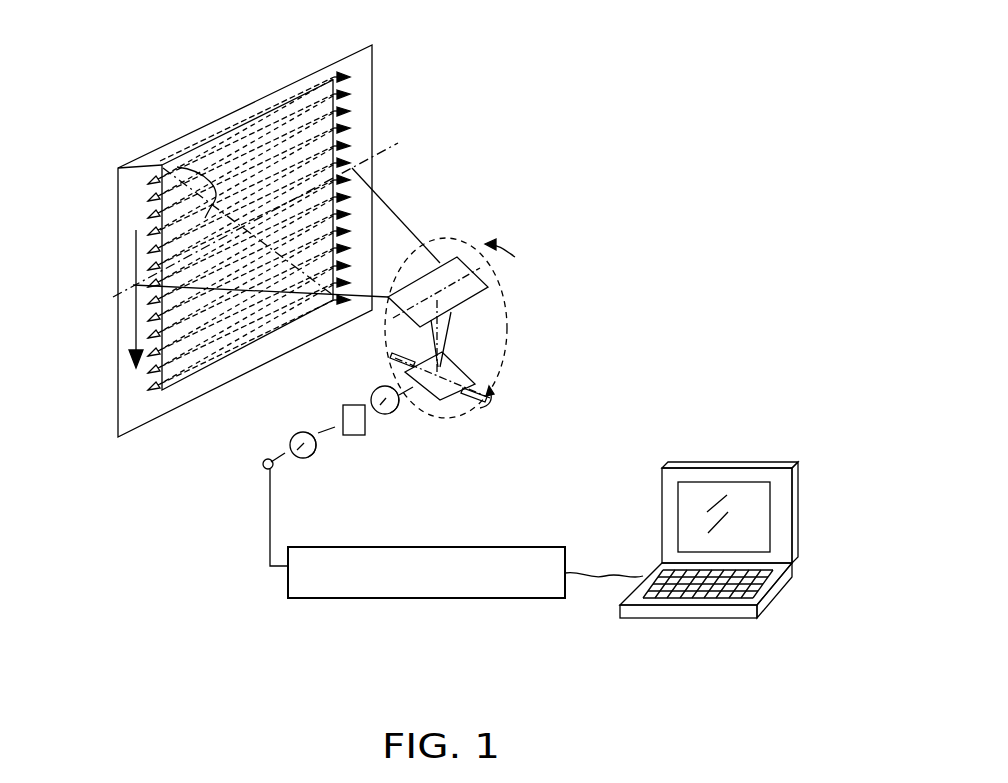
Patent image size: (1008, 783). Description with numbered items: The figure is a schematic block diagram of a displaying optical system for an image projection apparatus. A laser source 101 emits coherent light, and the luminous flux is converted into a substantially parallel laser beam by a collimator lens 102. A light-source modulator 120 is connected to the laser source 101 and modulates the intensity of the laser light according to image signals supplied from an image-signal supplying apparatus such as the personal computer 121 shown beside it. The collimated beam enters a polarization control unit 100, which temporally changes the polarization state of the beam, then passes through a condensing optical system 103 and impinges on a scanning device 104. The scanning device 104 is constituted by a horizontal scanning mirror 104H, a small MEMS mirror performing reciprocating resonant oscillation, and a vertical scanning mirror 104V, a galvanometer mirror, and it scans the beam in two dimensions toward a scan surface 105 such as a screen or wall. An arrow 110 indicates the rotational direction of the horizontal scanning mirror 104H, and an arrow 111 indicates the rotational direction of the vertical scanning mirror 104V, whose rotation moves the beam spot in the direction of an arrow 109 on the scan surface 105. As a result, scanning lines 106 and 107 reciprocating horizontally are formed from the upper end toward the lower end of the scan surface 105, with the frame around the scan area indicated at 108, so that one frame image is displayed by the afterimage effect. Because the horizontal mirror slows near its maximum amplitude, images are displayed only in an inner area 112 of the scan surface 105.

The polarization control unit 100 is at (343, 412).
The laser source 101 is at (262, 469).
The collimator lens 102 is at (315, 456).
The condensing optical system 103 is at (397, 415).
The scanning device 104 is at (508, 318).
The vertical scanning mirror 104V is at (443, 257).
The horizontal scanning mirror 104H is at (476, 384).
The scan surface 105 is at (273, 93).
The scanning line 106 is at (253, 122).
The scanning line 107 is at (302, 84).
The scan area edge 108 is at (130, 167).
The arrow 109 is at (136, 268).
The arrow 110 is at (493, 402).
The arrow 111 is at (515, 257).
The area 112 is at (187, 153).
The light-source modulator 120 is at (425, 598).
The computer 121 is at (787, 583).